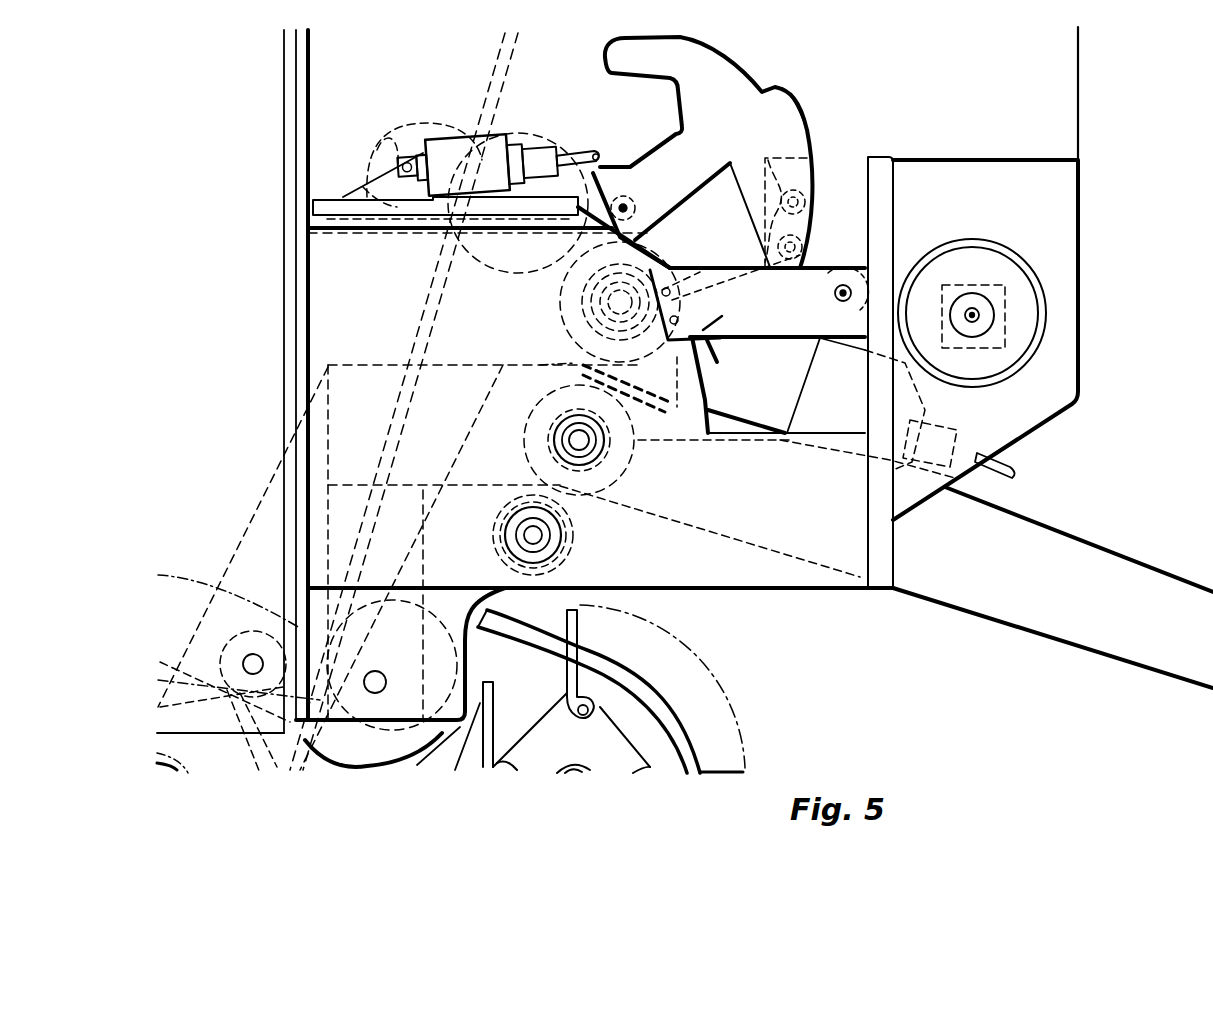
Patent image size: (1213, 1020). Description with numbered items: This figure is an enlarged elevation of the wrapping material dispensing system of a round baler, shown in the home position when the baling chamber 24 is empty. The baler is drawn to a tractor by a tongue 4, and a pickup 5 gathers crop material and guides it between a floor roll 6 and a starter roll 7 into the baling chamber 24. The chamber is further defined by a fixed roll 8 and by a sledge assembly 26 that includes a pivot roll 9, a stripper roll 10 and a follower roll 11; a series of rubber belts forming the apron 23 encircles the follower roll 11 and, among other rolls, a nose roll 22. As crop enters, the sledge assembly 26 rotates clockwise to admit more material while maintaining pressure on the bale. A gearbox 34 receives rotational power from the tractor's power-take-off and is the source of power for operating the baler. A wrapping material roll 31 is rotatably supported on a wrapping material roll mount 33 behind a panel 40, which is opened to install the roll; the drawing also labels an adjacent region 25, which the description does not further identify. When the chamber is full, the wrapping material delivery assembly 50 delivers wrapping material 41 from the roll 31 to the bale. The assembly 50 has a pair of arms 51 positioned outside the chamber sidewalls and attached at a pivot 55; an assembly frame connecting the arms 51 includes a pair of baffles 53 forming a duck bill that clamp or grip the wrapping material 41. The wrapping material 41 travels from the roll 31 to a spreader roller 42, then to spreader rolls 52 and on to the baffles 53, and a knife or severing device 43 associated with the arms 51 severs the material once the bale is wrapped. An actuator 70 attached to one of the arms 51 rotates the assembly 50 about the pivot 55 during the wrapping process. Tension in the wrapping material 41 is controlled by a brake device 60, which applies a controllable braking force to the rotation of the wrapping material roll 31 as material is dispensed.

The tongue 4 is at (1110, 543).
The pickup 5 is at (713, 653).
The floor roll 6 is at (394, 757).
The starter roll 7 is at (575, 530).
The fixed roll 8 is at (637, 457).
The pivot roll 9 is at (563, 323).
The stripper roll 10 is at (482, 267).
The follower roll 11 is at (398, 133).
The nose roll 22 is at (252, 655).
The apron 23 is at (497, 77).
The baling chamber 24 is at (352, 290).
The housing panel 25 is at (991, 85).
The sledge assembly 26 is at (377, 127).
The wrapping material roll 31 is at (1043, 313).
The wrapping material roll mount 33 is at (976, 313).
The gearbox 34 is at (854, 385).
The panel 40 is at (688, 35).
The wrapping material 41 is at (855, 297).
The spreader roller 42 is at (843, 284).
The knife or severing device 43 is at (707, 350).
The wrapping material delivery assembly 50 is at (790, 114).
The arms 51 is at (750, 75).
The spreader rolls 52 is at (790, 187).
The baffles 53 is at (740, 324).
The pivot 55 is at (625, 207).
The brake device 60 is at (1007, 328).
The actuator 70 is at (488, 150).